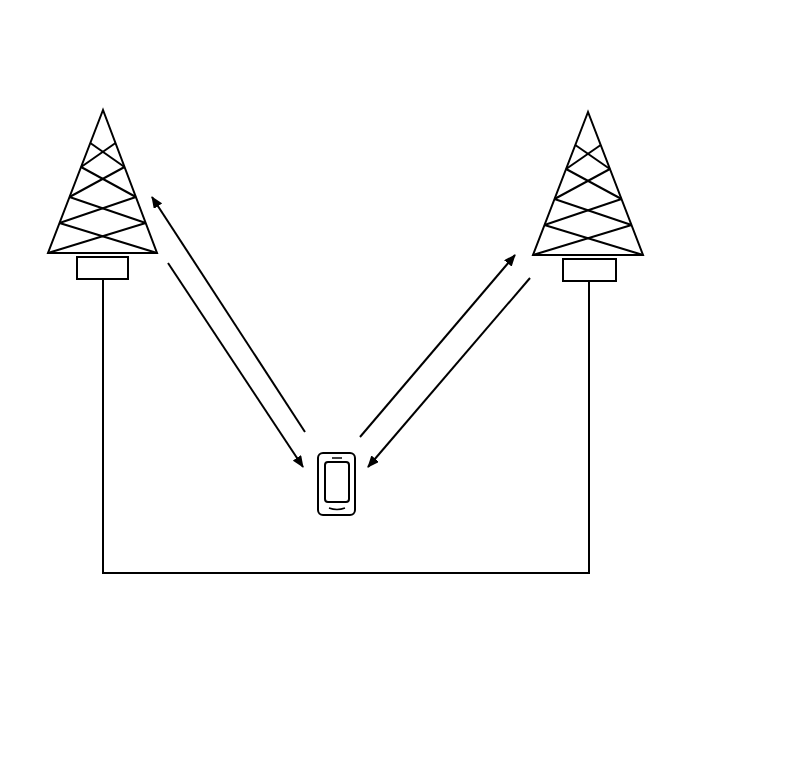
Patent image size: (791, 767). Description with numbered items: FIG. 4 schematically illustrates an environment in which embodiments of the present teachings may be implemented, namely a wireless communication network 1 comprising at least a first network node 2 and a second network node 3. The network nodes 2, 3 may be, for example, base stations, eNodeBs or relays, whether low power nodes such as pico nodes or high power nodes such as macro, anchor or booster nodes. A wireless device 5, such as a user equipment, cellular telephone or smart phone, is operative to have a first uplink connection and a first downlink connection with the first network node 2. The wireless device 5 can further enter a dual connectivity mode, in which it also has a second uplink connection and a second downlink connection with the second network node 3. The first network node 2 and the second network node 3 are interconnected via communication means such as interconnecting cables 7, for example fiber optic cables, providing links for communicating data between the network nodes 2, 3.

The wireless communication network 1 is at (554, 82).
The first network node 2 is at (102, 130).
The second network node 3 is at (583, 137).
The wireless device 5 is at (357, 490).
The interconnecting cables 7 is at (343, 574).